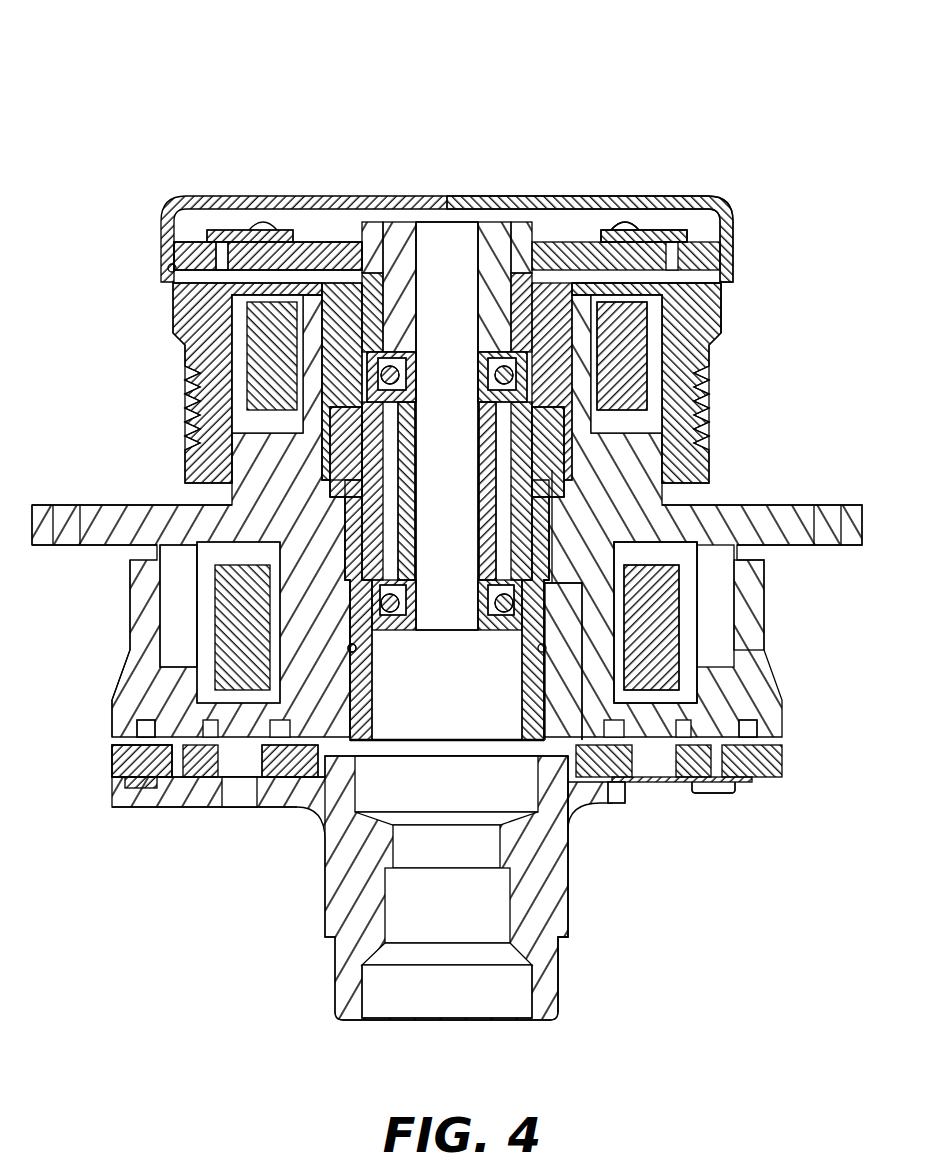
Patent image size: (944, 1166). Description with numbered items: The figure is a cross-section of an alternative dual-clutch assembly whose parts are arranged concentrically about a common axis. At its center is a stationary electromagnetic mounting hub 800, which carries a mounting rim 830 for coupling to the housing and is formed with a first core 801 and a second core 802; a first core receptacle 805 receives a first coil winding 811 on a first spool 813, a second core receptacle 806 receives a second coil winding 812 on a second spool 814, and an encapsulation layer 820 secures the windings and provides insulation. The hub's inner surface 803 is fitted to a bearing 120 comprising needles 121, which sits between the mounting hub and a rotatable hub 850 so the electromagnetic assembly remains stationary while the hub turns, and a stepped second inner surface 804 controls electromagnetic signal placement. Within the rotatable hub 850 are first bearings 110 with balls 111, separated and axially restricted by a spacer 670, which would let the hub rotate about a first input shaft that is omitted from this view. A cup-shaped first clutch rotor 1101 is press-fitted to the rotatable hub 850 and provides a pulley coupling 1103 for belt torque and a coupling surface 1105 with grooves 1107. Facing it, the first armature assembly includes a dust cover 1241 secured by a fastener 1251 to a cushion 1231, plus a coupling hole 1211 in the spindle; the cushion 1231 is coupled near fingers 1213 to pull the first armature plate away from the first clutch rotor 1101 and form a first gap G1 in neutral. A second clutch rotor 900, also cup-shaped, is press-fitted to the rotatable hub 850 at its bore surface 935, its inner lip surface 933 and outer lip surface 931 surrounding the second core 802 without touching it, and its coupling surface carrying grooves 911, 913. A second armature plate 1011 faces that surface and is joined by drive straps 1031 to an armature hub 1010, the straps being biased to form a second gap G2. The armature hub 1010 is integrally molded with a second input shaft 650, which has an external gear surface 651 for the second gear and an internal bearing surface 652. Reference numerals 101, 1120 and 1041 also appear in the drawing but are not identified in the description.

The electronic expansion valve 101 is at (196, 60).
The coil terminal 1120 is at (228, 240).
The dust cover 1241 is at (263, 224).
The inner surface 803 is at (383, 300).
The coupling hole 1211 is at (468, 220).
The fingers 1213 is at (565, 216).
The fastener 1251 is at (616, 222).
The grooves 1107 is at (638, 230).
The cushion 1231 is at (680, 226).
The coupling surface 1105 is at (740, 238).
The encapsulation layer 820 is at (173, 268).
The first gap G1 is at (168, 268).
The first core 801 is at (230, 345).
The first spool 813 is at (655, 305).
The first clutch rotor 1101 is at (718, 330).
The first core receptacle 805 is at (212, 430).
The first coil winding 811 is at (623, 377).
The pulley coupling 1103 is at (707, 447).
The electromagnetic mounting hub 800 is at (110, 504).
The second core receptacle 806 is at (283, 560).
The mounting rim 830 is at (850, 505).
The balls 111 is at (478, 357).
The first bearings 110 is at (398, 383).
The bearing 120 is at (362, 432).
The spacer 670 is at (413, 495).
The needles 121 is at (540, 468).
The outer lip surface 931 is at (178, 592).
The inner lip surface 933 is at (345, 625).
The bore surface 935 is at (348, 650).
The second clutch rotor 900 is at (124, 666).
The second gap G2 is at (108, 741).
The second core 802 is at (722, 628).
The rotatable hub 850 is at (373, 708).
The second coil winding 812 is at (653, 672).
The second armature plate 1011 is at (110, 765).
The groove 913 is at (151, 724).
The armature hub 1010 is at (178, 808).
The groove 911 is at (285, 735).
The second inner surface 804 is at (573, 610).
The drive straps 1031 is at (647, 783).
The retaining lip 1041 is at (710, 793).
The second spool 814 is at (623, 677).
The second input shaft 650 is at (337, 933).
The gear surface 651 is at (562, 998).
The bearing surface 652 is at (362, 1003).